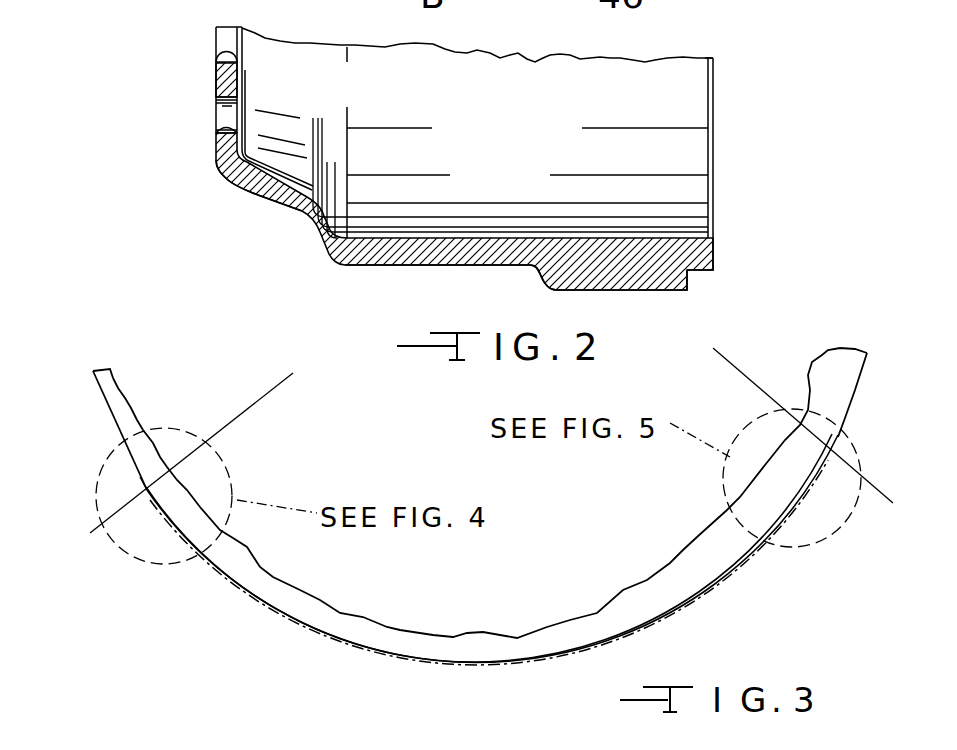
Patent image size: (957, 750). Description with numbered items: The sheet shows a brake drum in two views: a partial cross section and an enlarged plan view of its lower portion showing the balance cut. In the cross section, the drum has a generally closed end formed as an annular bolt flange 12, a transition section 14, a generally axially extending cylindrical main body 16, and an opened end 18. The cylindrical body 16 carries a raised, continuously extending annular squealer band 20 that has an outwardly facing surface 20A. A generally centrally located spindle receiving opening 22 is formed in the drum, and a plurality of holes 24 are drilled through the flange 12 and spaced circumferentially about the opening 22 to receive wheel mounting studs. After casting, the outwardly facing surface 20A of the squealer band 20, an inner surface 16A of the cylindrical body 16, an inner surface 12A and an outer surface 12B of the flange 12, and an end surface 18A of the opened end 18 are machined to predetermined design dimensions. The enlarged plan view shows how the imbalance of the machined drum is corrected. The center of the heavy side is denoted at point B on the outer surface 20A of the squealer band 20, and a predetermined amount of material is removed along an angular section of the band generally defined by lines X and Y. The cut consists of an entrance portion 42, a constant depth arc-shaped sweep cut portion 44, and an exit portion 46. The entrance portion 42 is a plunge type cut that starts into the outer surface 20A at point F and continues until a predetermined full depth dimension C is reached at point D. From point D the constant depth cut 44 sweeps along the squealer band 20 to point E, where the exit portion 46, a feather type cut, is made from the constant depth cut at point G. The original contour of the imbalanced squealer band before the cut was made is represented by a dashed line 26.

In FIG. 2, the annular bolt flange 12 is at (212, 166).
In FIG. 2, the inner surface of the flange 12A is at (243, 81).
In FIG. 2, the outer surface of the flange 12B is at (216, 81).
In FIG. 2, the transition section 14 is at (258, 200).
In FIG. 2, the cylindrical main body 16 is at (392, 268).
In FIG. 2, the inner surface of the cylindrical body 16A is at (455, 237).
In FIG. 2, the opened end 18 is at (722, 108).
In FIG. 2, the end surface of the opened end 18A is at (718, 252).
In FIG. 2, the squealer band 20 is at (672, 297).
In FIG. 3, the squealer band 20 is at (133, 396).
In FIG. 2, the outwardly facing surface of the squealer band 20A is at (573, 293).
In FIG. 3, the outwardly facing surface of the squealer band 20A is at (98, 398).
In FIG. 2, the spindle receiving opening 22 is at (216, 46).
In FIG. 2, the holes 24 is at (216, 125).
In FIG. 3, the dashed line 26 is at (753, 563).
In FIG. 3, the entrance portion 42 is at (142, 512).
In FIG. 3, the constant depth arc-shaped sweep cut portion 44 is at (708, 598).
In FIG. 3, the exit portion 46 is at (830, 478).
In FIG. 3, the point B is at (473, 670).
In FIG. 3, the full depth dimension C is at (262, 615).
In FIG. 3, the point D is at (148, 494).
In FIG. 3, the point E is at (826, 480).
In FIG. 3, the point F is at (140, 491).
In FIG. 3, the point G is at (837, 447).
In FIG. 3, the line X is at (267, 392).
In FIG. 3, the line Y is at (733, 369).